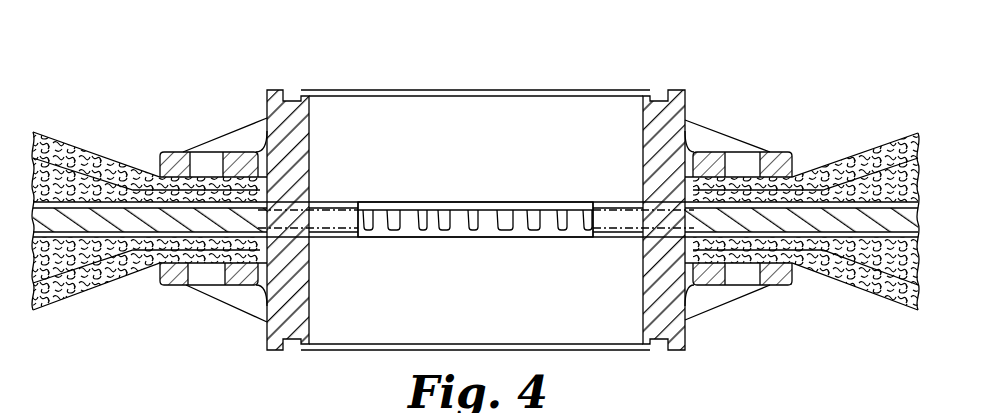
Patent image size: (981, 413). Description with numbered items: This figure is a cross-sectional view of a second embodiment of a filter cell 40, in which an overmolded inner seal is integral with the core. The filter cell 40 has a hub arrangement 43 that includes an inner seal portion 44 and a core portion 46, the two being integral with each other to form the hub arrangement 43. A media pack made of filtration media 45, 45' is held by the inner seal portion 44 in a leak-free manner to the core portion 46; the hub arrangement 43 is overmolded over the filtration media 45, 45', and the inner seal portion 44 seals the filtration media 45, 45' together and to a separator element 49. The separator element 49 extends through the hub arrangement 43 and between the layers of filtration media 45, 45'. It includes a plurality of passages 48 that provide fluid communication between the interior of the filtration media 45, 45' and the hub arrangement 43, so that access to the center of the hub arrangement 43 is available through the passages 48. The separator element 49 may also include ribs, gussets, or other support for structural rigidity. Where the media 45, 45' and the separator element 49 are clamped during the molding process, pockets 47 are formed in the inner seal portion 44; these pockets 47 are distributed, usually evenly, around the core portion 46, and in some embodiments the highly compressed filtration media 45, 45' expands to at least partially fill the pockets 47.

The filter cell 40 is at (488, 181).
The hub arrangement 43 is at (542, 86).
The inner seal portion 44 is at (164, 152).
The filtration media 45 is at (475, 197).
The filtration media 45' is at (475, 294).
The core portion 46 is at (309, 121).
The pockets 47 is at (191, 268).
The passages 48 is at (572, 226).
The separator element 49 is at (431, 203).